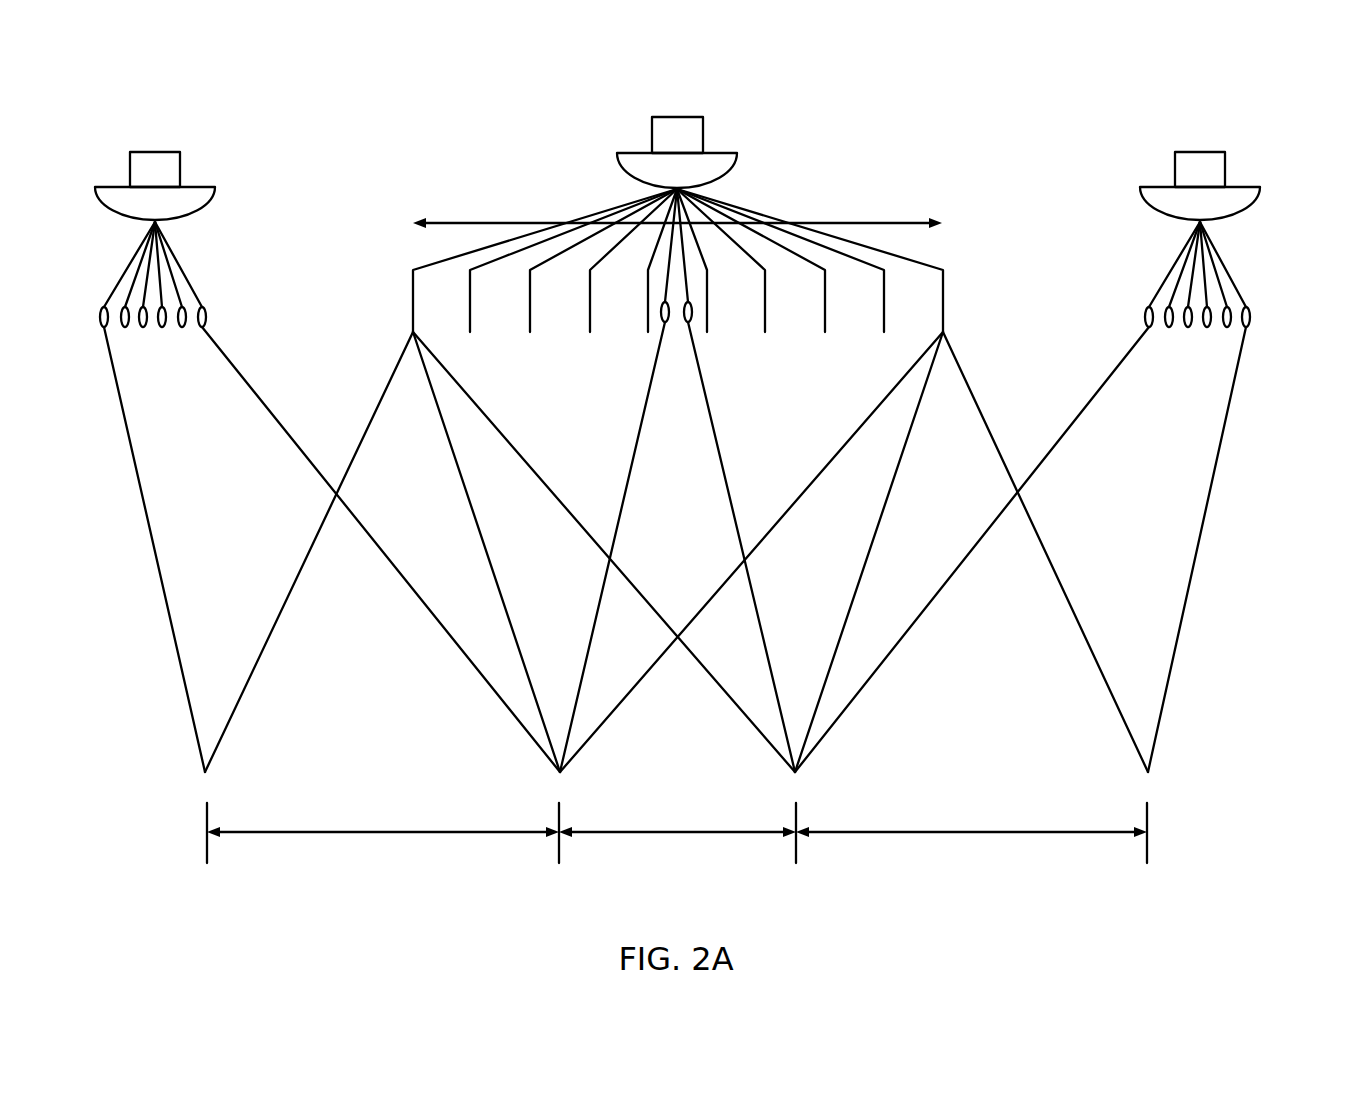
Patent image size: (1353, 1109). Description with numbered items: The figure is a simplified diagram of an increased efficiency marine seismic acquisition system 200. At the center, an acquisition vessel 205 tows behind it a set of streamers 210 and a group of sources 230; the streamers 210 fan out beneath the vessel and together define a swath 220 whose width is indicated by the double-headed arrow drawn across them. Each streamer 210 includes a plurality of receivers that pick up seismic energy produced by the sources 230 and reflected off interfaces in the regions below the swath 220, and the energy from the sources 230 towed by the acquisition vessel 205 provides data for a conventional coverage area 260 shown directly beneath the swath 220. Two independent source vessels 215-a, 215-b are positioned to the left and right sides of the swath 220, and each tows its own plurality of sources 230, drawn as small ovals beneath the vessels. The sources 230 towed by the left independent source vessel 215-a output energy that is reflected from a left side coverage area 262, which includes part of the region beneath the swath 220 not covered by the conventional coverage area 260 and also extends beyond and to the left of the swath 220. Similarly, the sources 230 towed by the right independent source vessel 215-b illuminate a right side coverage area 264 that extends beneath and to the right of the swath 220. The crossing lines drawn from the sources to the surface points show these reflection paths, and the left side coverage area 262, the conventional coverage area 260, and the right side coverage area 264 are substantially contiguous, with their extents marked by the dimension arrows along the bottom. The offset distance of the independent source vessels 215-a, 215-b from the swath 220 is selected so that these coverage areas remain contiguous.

The increased efficiency marine seismic acquisition system 200 is at (986, 120).
The acquisition vessel 205 is at (677, 117).
The independent source vessel 215-a is at (156, 152).
The independent source vessel 215-b is at (1201, 152).
The streamers 210 is at (944, 291).
The swath 220 is at (903, 223).
The sources 230 is at (205, 313).
The left side coverage area 262 is at (383, 833).
The conventional coverage area 260 is at (688, 833).
The right side coverage area 264 is at (972, 833).